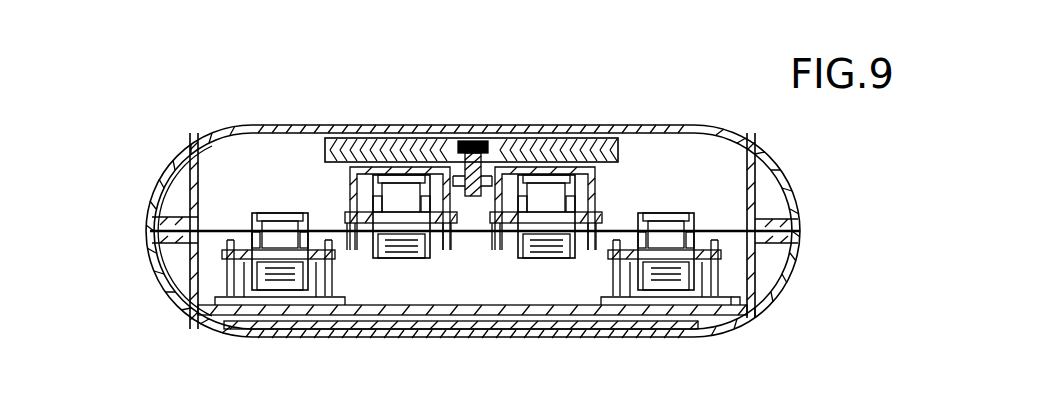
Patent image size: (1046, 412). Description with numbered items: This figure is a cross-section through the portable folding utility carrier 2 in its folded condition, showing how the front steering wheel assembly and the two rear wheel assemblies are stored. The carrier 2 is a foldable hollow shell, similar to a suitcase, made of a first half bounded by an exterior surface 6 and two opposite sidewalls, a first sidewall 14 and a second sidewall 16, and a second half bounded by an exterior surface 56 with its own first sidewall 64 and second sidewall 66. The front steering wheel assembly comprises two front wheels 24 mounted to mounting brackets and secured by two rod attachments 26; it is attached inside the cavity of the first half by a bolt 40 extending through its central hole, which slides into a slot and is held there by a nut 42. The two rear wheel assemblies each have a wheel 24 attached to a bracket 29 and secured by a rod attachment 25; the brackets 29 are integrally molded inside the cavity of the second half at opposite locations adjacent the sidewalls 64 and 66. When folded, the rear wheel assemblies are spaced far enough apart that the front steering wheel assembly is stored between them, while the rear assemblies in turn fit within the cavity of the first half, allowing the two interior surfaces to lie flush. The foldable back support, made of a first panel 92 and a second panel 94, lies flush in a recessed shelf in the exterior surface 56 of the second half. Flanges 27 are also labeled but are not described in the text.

The portable folding utility carrier apparatus 2 is at (622, 80).
The exterior surface 6 is at (397, 138).
The first sidewall 14 is at (782, 172).
The second sidewall 16 is at (157, 185).
The wheels 24 is at (373, 175).
The rod attachment 25 is at (333, 277).
The rod attachments 26 is at (704, 300).
The mounting flanges 27 is at (222, 250).
The brackets 29 is at (309, 297).
The bolt 40 is at (474, 148).
The nut 42 is at (462, 150).
The exterior surface 56 is at (205, 333).
The first sidewall 64 is at (795, 260).
The second sidewall 66 is at (157, 268).
The first panel 92 is at (462, 338).
The second panel 94 is at (496, 312).